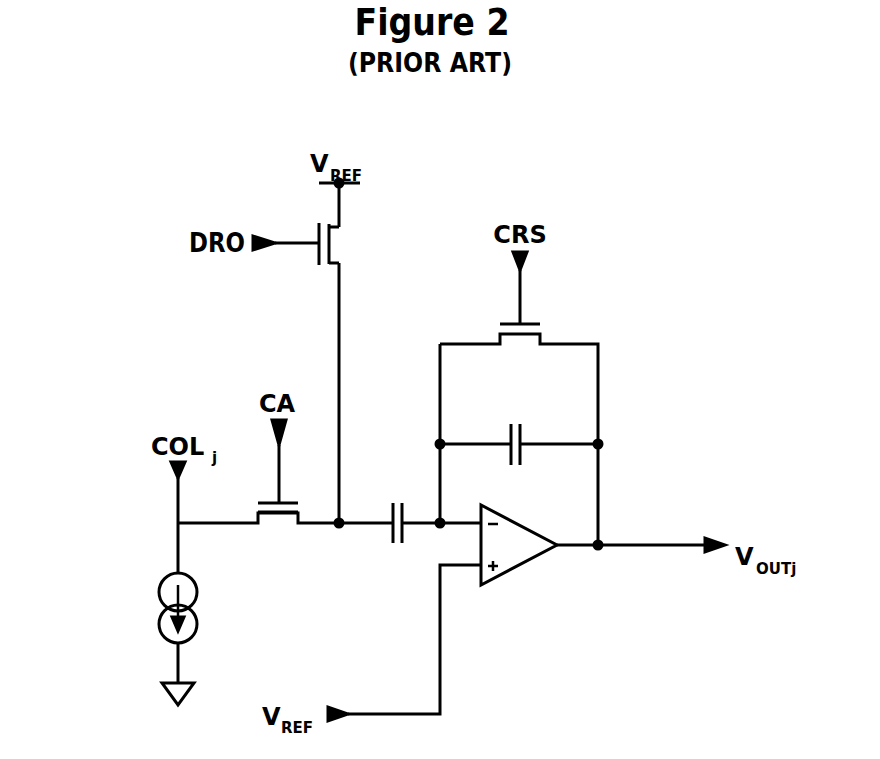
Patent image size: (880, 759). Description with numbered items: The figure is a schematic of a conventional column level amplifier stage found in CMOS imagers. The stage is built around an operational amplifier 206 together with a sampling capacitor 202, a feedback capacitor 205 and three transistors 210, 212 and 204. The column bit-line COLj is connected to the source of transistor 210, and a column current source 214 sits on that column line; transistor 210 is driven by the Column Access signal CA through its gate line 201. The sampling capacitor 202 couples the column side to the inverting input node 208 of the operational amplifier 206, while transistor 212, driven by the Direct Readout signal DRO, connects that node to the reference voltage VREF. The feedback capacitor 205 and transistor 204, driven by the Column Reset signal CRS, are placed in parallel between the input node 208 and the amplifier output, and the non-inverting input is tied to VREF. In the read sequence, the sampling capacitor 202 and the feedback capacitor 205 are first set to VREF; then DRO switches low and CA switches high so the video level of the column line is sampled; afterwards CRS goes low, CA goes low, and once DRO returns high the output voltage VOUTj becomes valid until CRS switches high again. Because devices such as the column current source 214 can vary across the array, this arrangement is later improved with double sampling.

The column amplifier gate line (CA) 201 is at (279, 382).
The sampling capacitor 202 is at (396, 495).
The transistor 204 is at (518, 353).
The feedback capacitor 205 is at (505, 420).
The operational amplifier 206 is at (528, 525).
The amplifier input node 208 is at (431, 533).
The transistor 210 is at (279, 533).
The transistor 212 is at (342, 243).
The column current source 214 is at (127, 612).